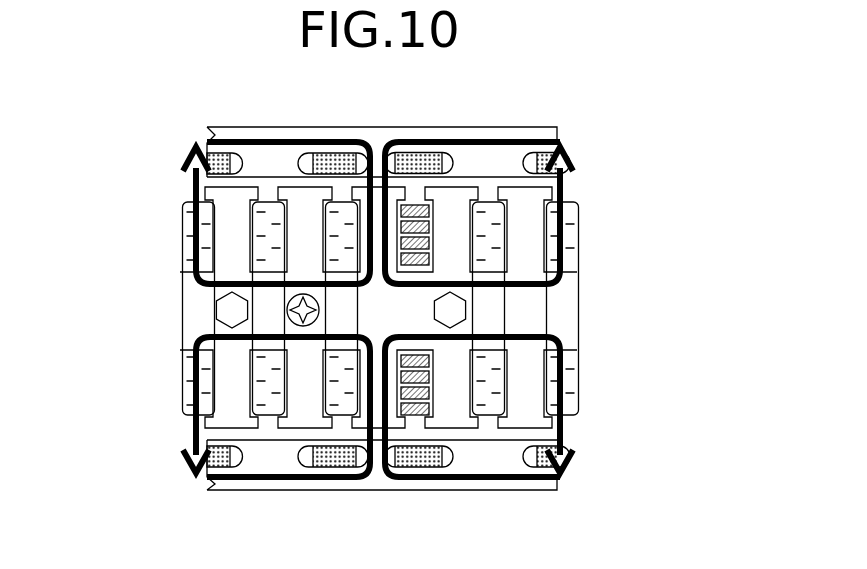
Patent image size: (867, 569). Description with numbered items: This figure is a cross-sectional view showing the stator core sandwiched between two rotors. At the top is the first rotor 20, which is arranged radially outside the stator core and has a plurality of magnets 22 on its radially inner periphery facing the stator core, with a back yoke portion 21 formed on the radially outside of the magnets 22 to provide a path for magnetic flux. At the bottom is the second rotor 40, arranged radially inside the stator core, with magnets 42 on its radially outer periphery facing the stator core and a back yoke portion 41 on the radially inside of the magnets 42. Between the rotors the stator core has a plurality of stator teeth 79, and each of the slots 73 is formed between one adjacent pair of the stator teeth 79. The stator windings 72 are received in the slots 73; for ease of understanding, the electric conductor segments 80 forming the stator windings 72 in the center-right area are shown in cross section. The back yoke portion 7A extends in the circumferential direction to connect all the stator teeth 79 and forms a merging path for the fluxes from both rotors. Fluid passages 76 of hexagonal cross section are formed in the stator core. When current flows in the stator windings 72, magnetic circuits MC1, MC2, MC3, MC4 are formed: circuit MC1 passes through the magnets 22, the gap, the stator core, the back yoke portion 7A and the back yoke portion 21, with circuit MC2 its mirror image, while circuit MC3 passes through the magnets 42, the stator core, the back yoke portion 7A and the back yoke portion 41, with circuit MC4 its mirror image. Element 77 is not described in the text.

The first rotor 20 is at (375, 132).
The back yoke portion 21 is at (297, 128).
The magnets 22 is at (413, 163).
The second rotor 40 is at (383, 496).
The back yoke portion 41 is at (243, 482).
The magnets 42 is at (412, 468).
The stator windings 72 is at (403, 308).
The electric conductor segments 80 is at (338, 237).
The slots 73 is at (487, 204).
The fluid passages 76 is at (222, 316).
The screw 77 is at (288, 318).
The stator teeth 79 is at (447, 407).
The back yoke portion 7A is at (590, 263).
The magnetic circuit MC1 is at (190, 178).
The magnetic circuit MC2 is at (568, 183).
The magnetic circuit MC3 is at (190, 441).
The magnetic circuit MC4 is at (575, 439).